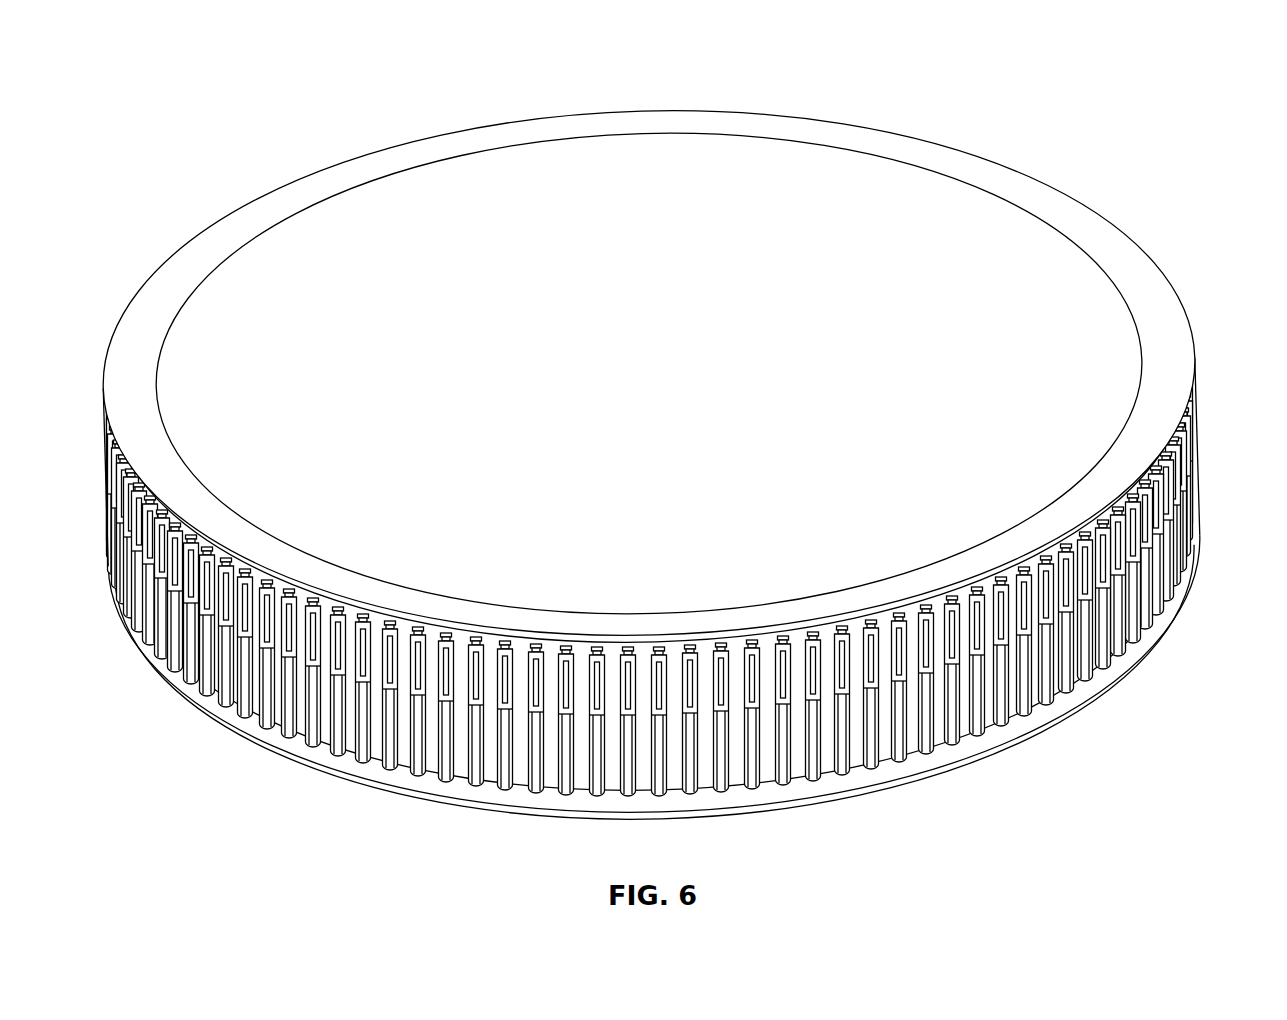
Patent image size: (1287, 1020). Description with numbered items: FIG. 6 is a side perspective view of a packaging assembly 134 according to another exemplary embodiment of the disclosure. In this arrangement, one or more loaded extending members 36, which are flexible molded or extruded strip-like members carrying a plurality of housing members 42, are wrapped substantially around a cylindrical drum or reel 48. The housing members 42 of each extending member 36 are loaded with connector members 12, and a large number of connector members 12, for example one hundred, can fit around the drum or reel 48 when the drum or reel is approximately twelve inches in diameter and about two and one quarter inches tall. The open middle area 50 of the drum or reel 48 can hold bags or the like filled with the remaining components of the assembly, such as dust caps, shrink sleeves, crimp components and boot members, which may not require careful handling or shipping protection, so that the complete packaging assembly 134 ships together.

The packaging assembly 134 is at (190, 75).
The drum or reel 48 is at (1052, 194).
The middle area 50 is at (435, 382).
The extending member 36 is at (133, 593).
The housing members 42 is at (137, 563).
The connector members 12 is at (308, 595).